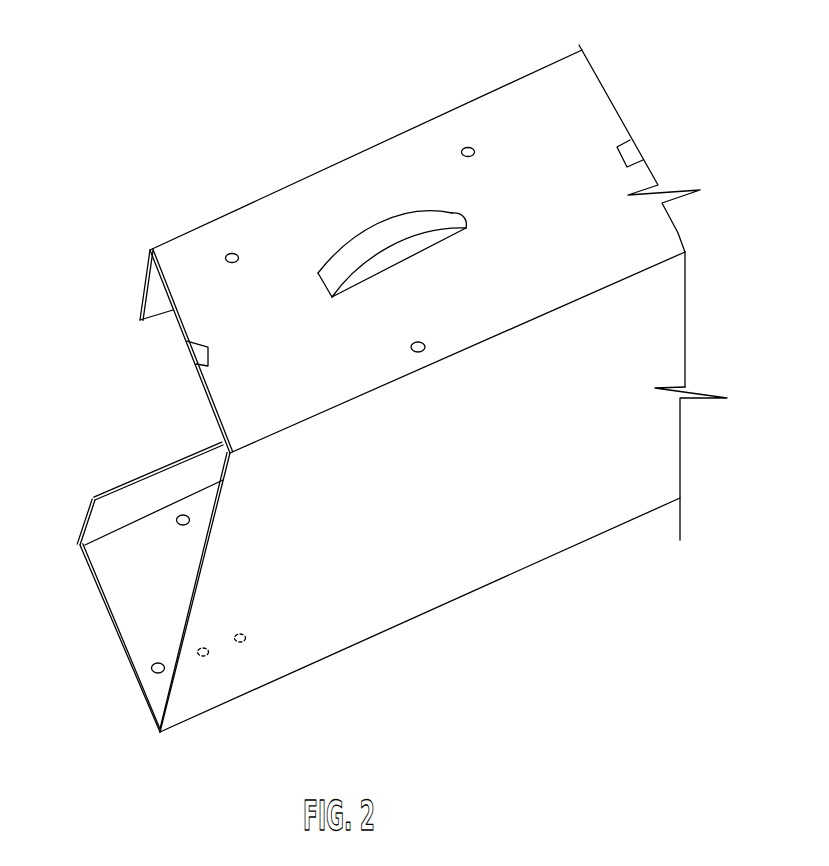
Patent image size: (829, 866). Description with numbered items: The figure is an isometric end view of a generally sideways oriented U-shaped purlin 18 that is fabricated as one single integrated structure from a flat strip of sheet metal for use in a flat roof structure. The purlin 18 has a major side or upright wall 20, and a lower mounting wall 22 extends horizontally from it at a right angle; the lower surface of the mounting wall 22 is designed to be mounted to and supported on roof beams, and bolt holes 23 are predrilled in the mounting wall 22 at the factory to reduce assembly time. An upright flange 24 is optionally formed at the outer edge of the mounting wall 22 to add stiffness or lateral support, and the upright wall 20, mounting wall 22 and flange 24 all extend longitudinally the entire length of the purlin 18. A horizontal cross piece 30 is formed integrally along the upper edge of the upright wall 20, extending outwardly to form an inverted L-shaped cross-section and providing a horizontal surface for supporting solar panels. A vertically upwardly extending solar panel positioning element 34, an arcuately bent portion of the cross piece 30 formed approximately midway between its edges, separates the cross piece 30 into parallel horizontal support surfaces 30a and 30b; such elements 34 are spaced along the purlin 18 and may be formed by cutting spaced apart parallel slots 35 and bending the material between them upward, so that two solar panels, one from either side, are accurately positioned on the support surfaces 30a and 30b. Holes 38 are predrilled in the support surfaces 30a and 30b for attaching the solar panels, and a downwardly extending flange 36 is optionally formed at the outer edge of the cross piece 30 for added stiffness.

The purlin 18 is at (135, 116).
The upright wall 20 is at (650, 435).
The mounting wall 22 is at (138, 687).
The bolt holes 23 is at (178, 521).
The upright flange 24 is at (88, 527).
The cross piece 30 is at (283, 190).
The support surface 30a is at (653, 242).
The support surface 30b is at (373, 176).
The solar panel positioning element 34 is at (206, 346).
The slots 35 is at (380, 253).
The downwardly extending flange 36 is at (142, 298).
The holes 38 is at (228, 254).